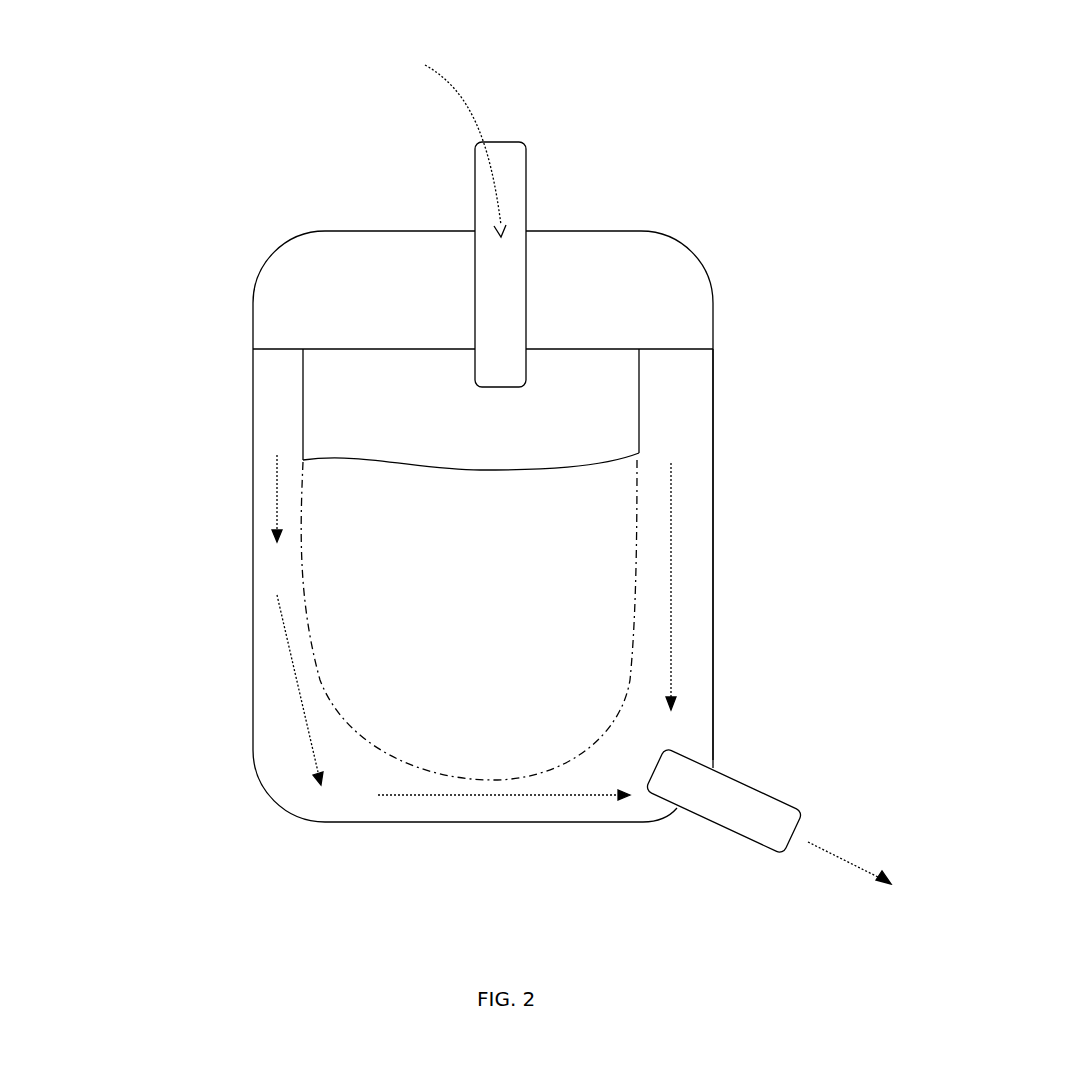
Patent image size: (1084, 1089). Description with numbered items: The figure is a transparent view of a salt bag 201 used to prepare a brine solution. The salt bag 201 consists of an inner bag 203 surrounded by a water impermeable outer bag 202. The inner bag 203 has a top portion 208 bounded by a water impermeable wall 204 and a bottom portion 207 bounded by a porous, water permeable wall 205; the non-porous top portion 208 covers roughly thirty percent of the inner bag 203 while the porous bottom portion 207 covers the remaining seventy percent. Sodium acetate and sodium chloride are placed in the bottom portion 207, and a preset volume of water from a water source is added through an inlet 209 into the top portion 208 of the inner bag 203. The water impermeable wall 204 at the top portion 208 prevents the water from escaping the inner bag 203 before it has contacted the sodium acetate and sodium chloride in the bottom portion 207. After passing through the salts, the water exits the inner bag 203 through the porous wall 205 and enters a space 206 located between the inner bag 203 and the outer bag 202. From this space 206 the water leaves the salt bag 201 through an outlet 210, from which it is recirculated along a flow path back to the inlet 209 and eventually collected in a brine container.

The salt bag 201 is at (483, 579).
The outer bag 202 is at (713, 377).
The inner bag 203 is at (378, 750).
The water impermeable wall 204 is at (300, 380).
The porous, water permeable wall 205 is at (298, 577).
The space 206 is at (695, 538).
The bottom portion 207 is at (504, 707).
The top portion 208 is at (471, 409).
The inlet 209 is at (523, 174).
The outlet 210 is at (743, 788).